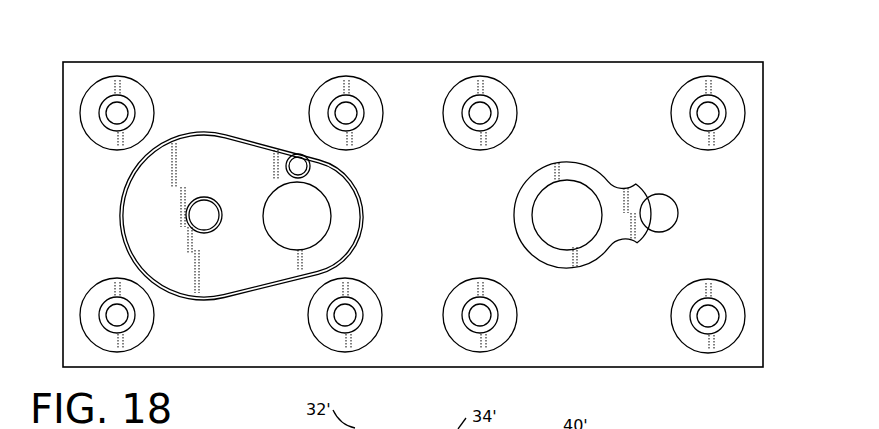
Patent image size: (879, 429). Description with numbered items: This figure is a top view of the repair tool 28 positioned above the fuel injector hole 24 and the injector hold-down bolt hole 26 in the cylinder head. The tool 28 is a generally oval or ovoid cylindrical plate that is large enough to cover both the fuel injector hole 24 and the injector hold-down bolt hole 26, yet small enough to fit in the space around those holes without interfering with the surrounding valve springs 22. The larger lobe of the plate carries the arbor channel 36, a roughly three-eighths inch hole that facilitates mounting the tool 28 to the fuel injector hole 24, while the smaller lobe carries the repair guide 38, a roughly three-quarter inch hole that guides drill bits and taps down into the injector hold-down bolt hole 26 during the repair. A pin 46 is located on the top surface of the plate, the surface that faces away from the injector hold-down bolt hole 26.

The valve springs 22 is at (370, 98).
The fuel injector hole 24 is at (563, 260).
The injector hold-down bolt hole 26 is at (688, 212).
The tool 28 is at (231, 306).
The arbor channel 36 is at (185, 208).
The repair guide 38 is at (285, 197).
The pin 46 is at (303, 173).